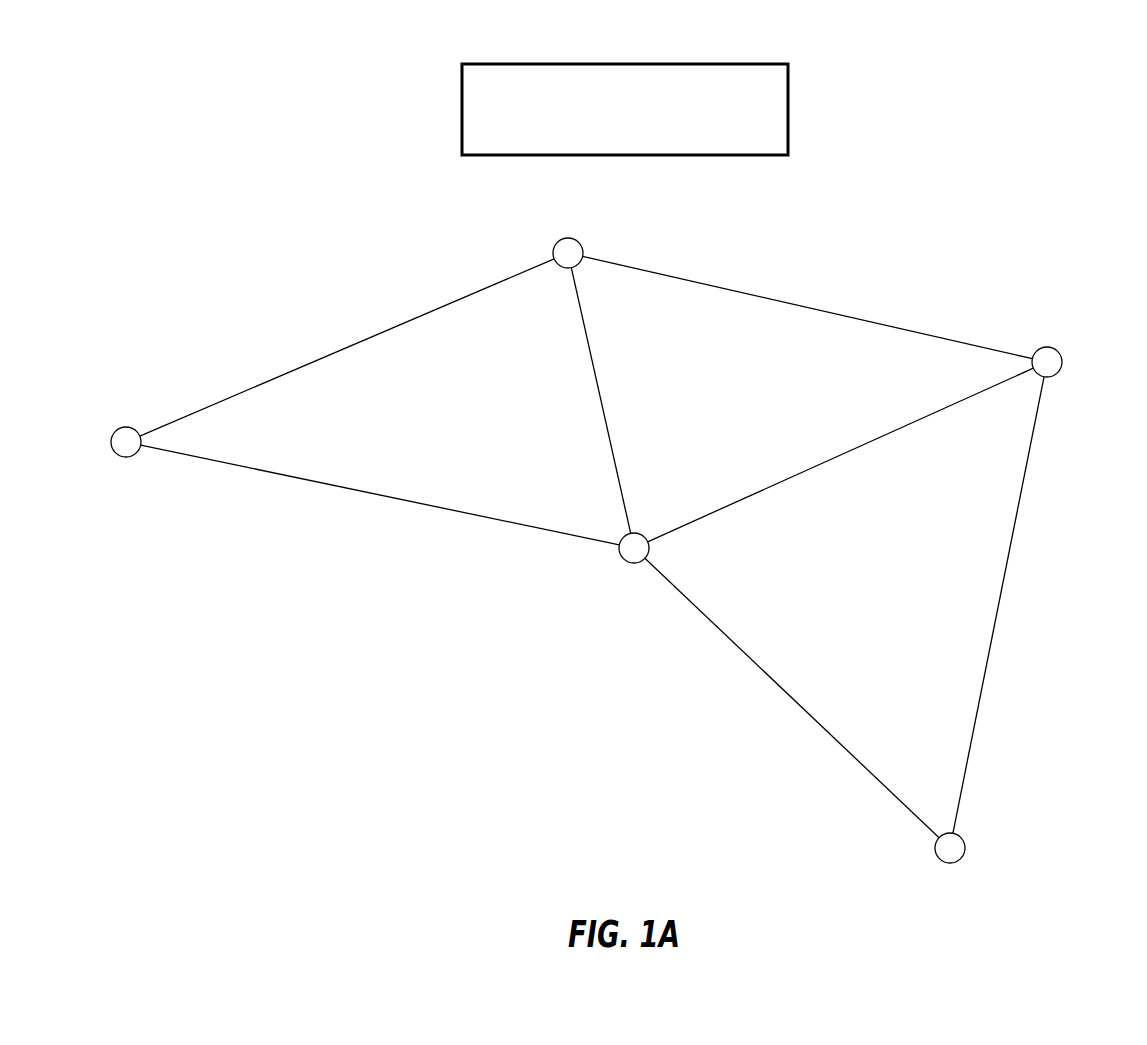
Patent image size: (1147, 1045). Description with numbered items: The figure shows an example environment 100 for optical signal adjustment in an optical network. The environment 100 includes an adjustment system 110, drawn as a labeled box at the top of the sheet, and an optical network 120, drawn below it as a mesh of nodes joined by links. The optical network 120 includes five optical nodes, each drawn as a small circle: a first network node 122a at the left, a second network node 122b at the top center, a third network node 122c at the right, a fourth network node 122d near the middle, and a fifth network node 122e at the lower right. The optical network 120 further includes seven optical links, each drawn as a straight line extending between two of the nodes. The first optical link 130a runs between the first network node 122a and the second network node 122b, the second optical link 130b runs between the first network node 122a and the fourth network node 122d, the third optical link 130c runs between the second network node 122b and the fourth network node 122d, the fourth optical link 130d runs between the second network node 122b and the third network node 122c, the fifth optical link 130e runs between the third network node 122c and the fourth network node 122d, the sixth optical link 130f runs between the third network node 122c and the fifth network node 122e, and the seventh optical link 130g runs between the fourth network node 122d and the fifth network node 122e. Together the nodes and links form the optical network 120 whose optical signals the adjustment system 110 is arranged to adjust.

The environment 100 is at (1038, 72).
The adjustment system 110 is at (640, 135).
The optical network 120 is at (132, 322).
The first network node 122a is at (128, 427).
The second network node 122b is at (568, 238).
The third network node 122c is at (1050, 347).
The fourth network node 122d is at (632, 564).
The fifth network node 122e is at (948, 864).
The first optical link 130a is at (349, 347).
The second optical link 130b is at (382, 499).
The third optical link 130c is at (603, 400).
The fourth optical link 130d is at (808, 302).
The fifth optical link 130e is at (840, 457).
The sixth optical link 130f is at (1003, 607).
The seventh optical link 130g is at (790, 700).